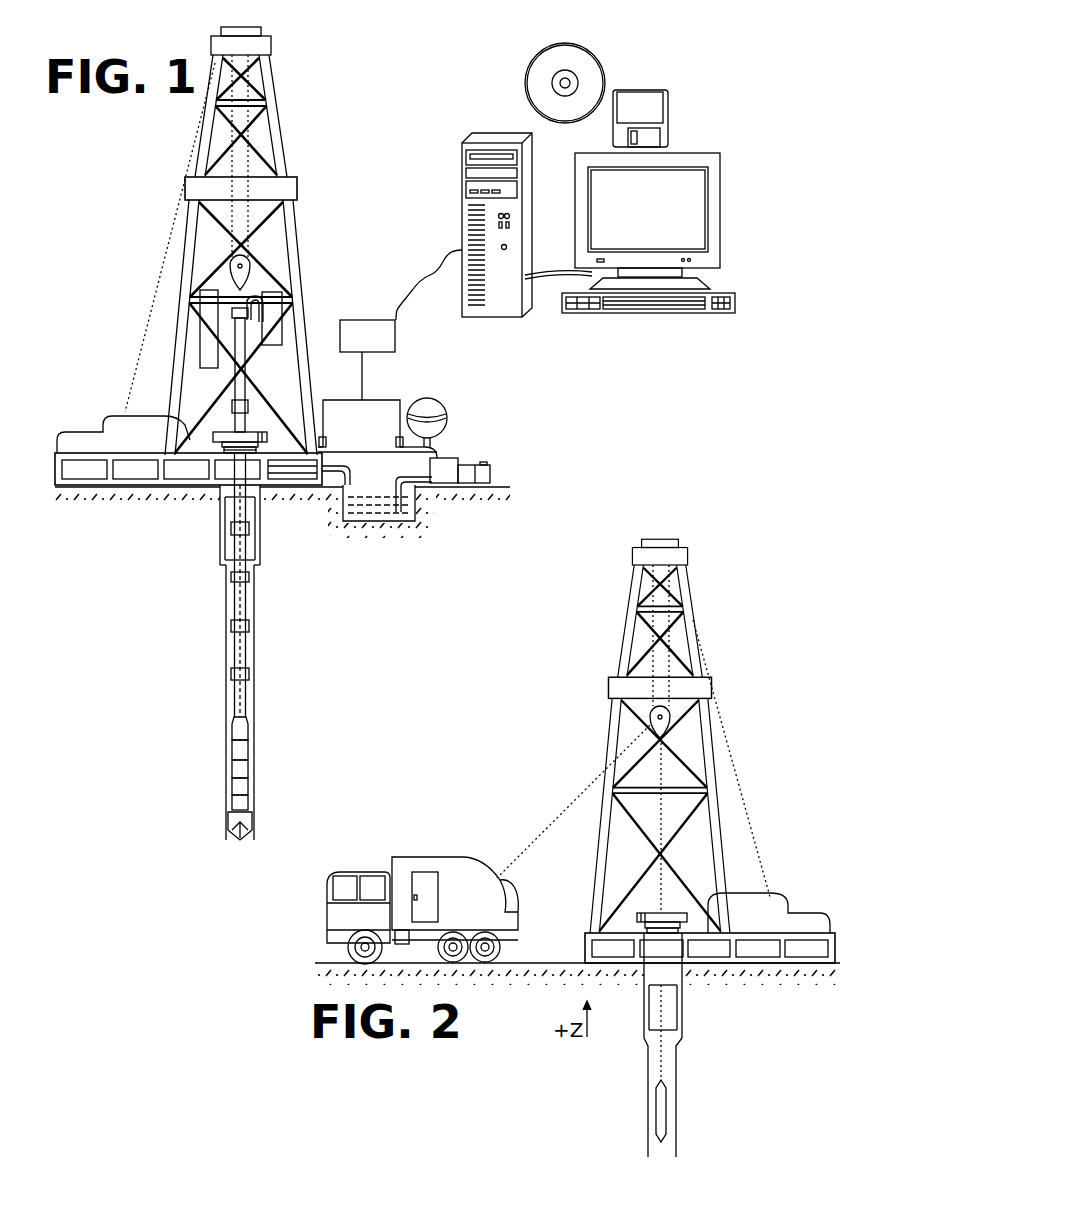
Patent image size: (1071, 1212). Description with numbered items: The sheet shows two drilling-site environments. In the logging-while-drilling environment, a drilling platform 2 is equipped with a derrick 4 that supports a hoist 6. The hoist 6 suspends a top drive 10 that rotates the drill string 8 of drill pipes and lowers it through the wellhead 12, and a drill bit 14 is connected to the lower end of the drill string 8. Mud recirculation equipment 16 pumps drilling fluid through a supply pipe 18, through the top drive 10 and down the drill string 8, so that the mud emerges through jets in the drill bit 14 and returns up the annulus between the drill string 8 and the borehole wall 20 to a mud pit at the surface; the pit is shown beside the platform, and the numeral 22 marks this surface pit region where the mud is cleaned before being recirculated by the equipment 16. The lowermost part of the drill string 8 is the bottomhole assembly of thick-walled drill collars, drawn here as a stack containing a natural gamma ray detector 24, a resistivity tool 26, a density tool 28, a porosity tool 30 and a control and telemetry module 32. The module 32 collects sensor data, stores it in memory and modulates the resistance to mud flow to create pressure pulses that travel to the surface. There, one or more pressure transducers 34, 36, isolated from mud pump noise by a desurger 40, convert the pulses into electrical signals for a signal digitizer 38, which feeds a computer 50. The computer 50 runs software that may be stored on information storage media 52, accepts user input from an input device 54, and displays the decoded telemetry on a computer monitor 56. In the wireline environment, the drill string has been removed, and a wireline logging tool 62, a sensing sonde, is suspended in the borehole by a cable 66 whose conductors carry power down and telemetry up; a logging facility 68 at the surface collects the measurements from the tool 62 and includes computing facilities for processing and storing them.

In FIG. 1, the drilling platform 2 is at (55, 458).
In FIG. 2, the drilling platform 2 is at (585, 940).
In FIG. 1, the derrick 4 is at (278, 150).
In FIG. 2, the derrick 4 is at (597, 905).
In FIG. 1, the hoist 6 is at (248, 262).
In FIG. 2, the hoist 6 is at (650, 713).
In FIG. 1, the drill string 8 is at (245, 607).
In FIG. 1, the top drive 10 is at (240, 330).
In FIG. 1, the wellhead 12 is at (217, 432).
In FIG. 2, the wellhead 12 is at (647, 913).
In FIG. 1, the drill bit 14 is at (250, 828).
In FIG. 1, the mud recirculation equipment 16 is at (455, 462).
In FIG. 1, the supply pipe 18 is at (400, 453).
In FIG. 1, the borehole wall 20 is at (254, 614).
In FIG. 1, the mud pit 22 is at (357, 510).
In FIG. 1, the natural gamma ray detector 24 is at (233, 802).
In FIG. 1, the resistivity tool 26 is at (248, 778).
In FIG. 1, the density tool 28 is at (233, 762).
In FIG. 1, the porosity tool 30 is at (250, 743).
In FIG. 1, the control and telemetry module 32 is at (233, 729).
In FIG. 1, the pressure transducer 34 is at (323, 440).
In FIG. 1, the pressure transducer 36 is at (397, 438).
In FIG. 1, the signal digitizer 38 is at (380, 350).
In FIG. 1, the desurger 40 is at (421, 399).
In FIG. 1, the computer 50 is at (530, 243).
In FIG. 1, the information storage media 52 is at (627, 90).
In FIG. 1, the input device 54 is at (713, 313).
In FIG. 1, the computer monitor 56 is at (708, 268).
In FIG. 2, the wireline logging tool 62 is at (664, 1103).
In FIG. 2, the cable 66 is at (597, 785).
In FIG. 2, the logging facility 68 is at (456, 858).